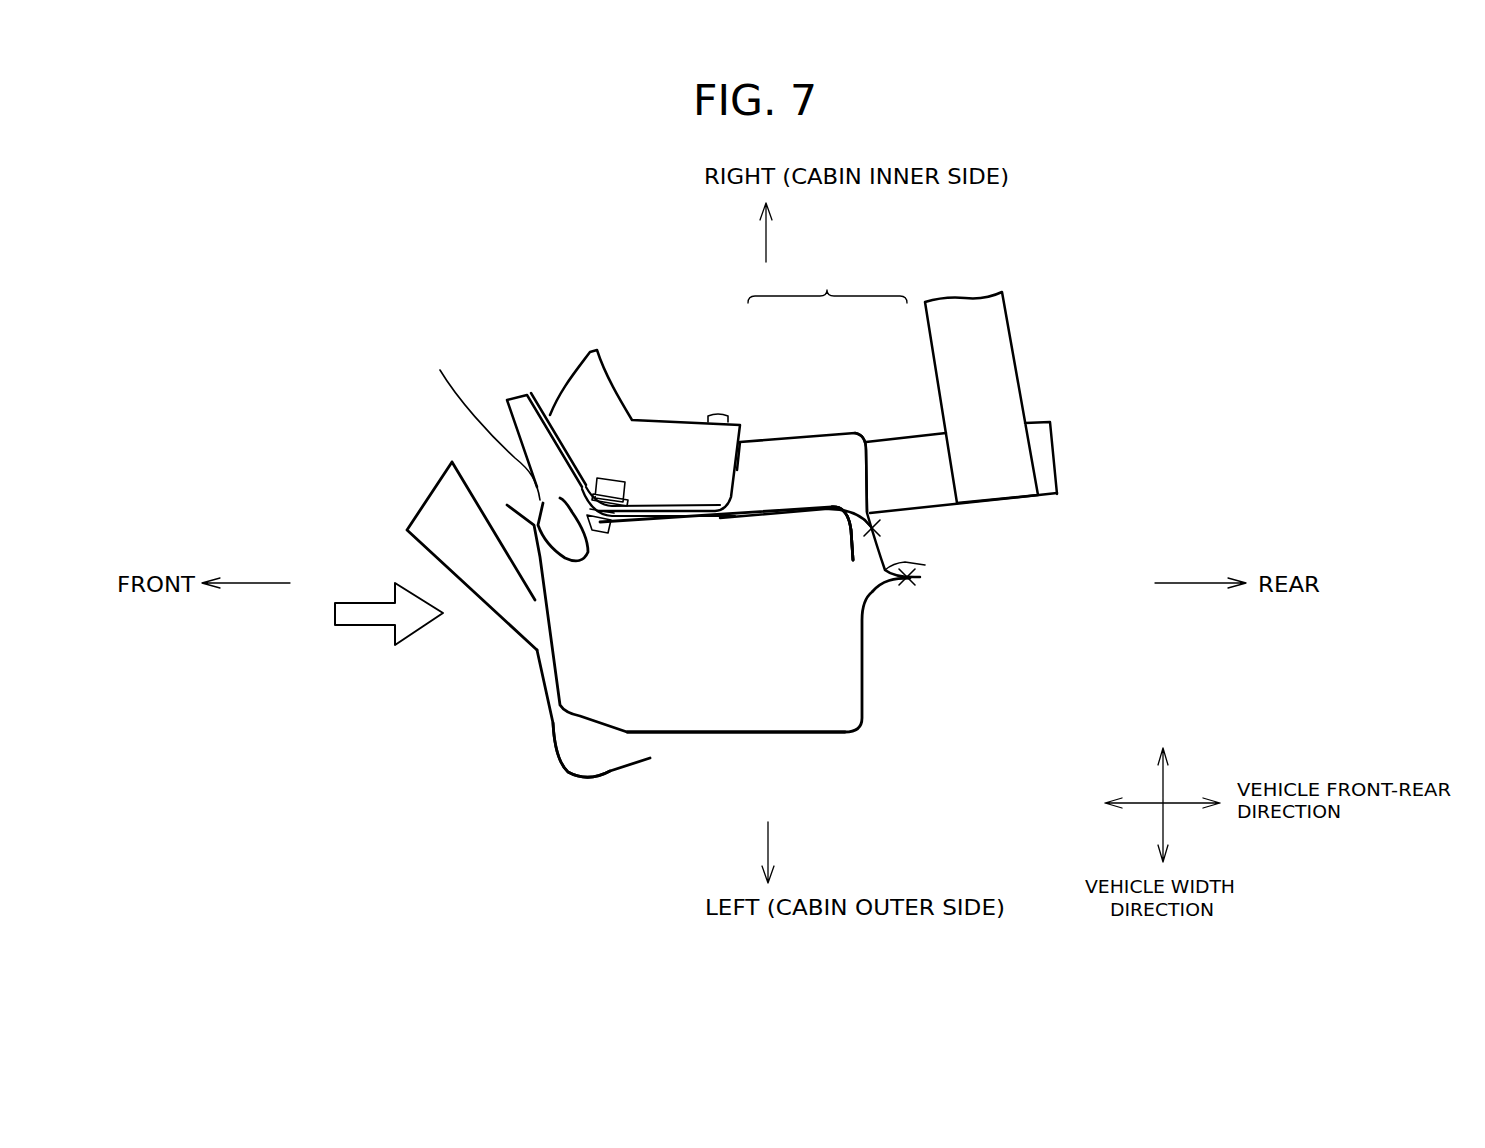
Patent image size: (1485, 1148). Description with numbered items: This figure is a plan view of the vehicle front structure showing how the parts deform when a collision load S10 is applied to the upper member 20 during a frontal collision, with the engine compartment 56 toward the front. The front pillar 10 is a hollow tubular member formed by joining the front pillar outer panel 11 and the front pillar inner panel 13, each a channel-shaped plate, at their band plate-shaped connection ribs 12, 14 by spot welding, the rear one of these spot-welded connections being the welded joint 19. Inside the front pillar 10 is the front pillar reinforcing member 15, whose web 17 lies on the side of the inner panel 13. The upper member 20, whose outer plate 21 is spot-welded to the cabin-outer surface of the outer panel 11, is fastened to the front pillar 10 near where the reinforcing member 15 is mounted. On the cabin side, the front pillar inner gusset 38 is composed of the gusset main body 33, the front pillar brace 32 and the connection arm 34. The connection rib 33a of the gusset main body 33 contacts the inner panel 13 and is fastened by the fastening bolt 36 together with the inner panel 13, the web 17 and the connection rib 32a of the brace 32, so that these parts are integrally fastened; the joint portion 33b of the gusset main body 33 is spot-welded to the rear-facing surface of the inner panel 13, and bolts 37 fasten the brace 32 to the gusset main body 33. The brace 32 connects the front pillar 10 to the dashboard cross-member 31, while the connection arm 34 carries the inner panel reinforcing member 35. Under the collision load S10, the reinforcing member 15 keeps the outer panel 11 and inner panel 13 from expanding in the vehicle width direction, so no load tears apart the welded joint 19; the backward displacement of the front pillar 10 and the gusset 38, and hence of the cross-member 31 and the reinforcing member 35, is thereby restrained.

The front pillar 10 is at (813, 763).
The front pillar outer panel 11 is at (866, 708).
The connection rib 12 is at (535, 528).
The front pillar inner panel 13 is at (880, 550).
The connection rib 14 is at (1030, 600).
The front pillar reinforcing member 15 is at (832, 555).
The web 17 is at (923, 624).
The welded joint 19 is at (920, 578).
The upper member 20 is at (525, 663).
The outer plate 21 is at (593, 783).
The dashboard cross-member 31 is at (514, 488).
The front pillar brace 32 is at (688, 404).
The connection rib 32a is at (550, 413).
The gusset main body 33 is at (815, 418).
The connection rib 33a is at (832, 509).
The joint portion 33b is at (880, 533).
The connection arm 34 is at (905, 434).
The inner panel reinforcing member 35 is at (1006, 315).
The fastening bolt 36 is at (613, 483).
The bolt 37 is at (718, 413).
The front pillar inner gusset 38 is at (827, 281).
The engine compartment 56 is at (362, 298).
The side collision load S10 is at (353, 625).